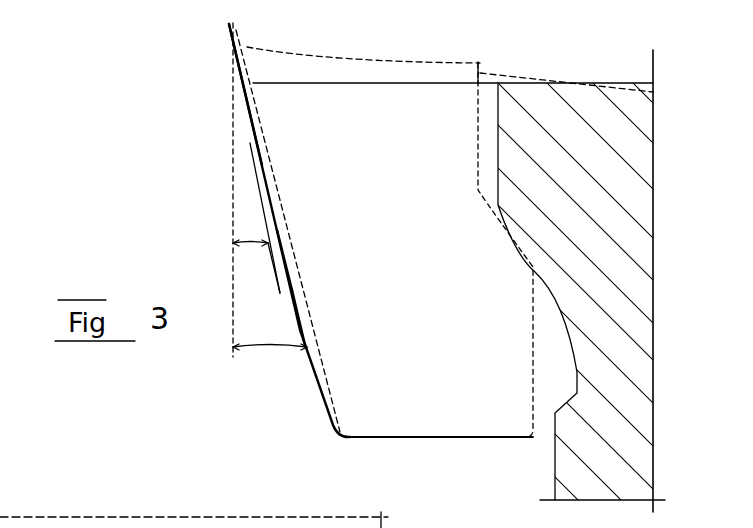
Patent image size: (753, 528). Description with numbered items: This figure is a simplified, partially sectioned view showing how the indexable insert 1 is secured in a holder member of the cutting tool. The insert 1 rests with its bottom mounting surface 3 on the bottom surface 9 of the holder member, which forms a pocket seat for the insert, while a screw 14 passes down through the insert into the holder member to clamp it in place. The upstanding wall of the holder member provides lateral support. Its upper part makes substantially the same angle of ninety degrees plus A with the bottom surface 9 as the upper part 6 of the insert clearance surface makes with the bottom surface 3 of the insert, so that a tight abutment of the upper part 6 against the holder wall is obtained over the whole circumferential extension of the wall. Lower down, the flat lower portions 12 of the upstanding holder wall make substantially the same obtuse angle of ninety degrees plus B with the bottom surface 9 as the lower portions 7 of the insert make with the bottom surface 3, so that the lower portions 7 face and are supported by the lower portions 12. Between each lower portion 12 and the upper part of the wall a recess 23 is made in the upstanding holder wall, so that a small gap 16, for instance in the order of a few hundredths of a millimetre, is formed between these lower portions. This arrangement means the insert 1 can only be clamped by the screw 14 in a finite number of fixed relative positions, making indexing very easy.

The indexable insert 1 is at (348, 377).
The bottom mounting surface 3 is at (430, 432).
The upper part of the insert clearance surface 6 is at (247, 105).
The lower portions of the insert 7 is at (293, 265).
The bottom surface of the holder member 9 is at (455, 438).
The flat lower portions of the upstanding holder wall 12 is at (290, 293).
The screw 14 is at (567, 107).
The gap 16 is at (297, 312).
The recess 23 is at (250, 148).
The angle A is at (250, 228).
The angle B is at (270, 333).